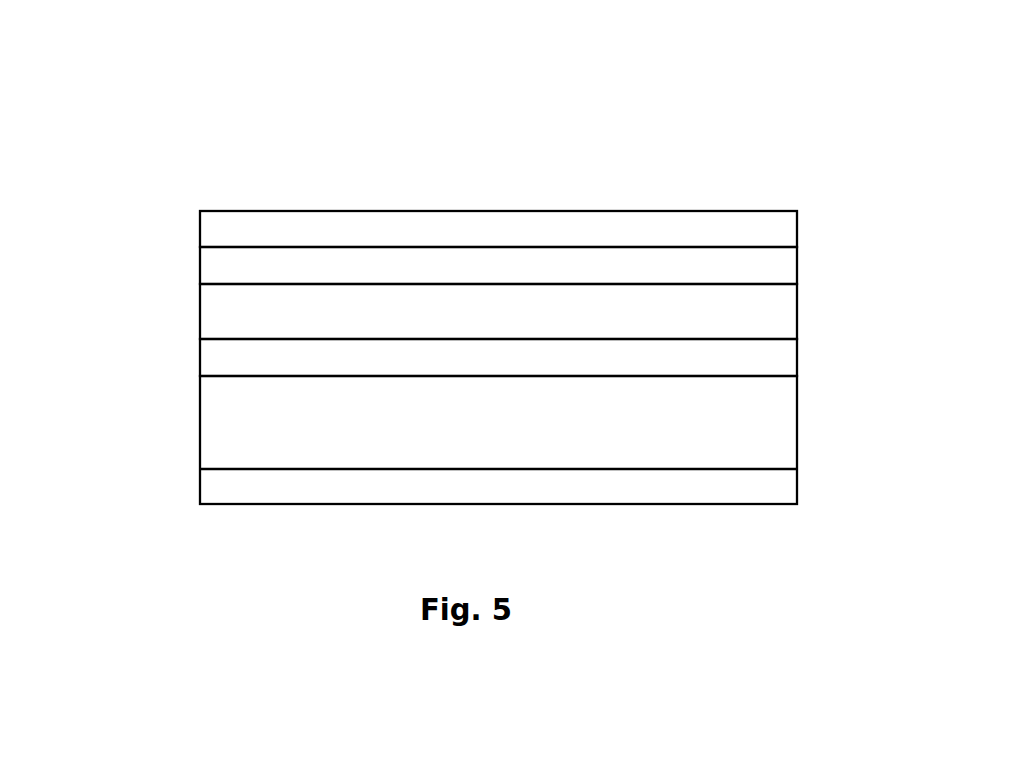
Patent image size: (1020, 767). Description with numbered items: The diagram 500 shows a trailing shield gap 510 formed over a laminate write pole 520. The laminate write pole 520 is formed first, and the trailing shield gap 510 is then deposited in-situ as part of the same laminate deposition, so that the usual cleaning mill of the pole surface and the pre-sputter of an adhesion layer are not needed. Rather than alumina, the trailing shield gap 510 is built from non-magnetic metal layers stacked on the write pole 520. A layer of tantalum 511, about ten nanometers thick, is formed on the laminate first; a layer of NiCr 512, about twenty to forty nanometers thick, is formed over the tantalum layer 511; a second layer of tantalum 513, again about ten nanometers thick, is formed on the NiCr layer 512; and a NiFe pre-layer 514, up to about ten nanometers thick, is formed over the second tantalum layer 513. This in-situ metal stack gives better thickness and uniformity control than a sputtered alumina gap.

The diagram 500 is at (160, 126).
The trailing shield gap 510 is at (172, 358).
The layer of tantalum 511 is at (559, 352).
The layer of NiCr 512 is at (559, 311).
The second layer of tantalum 513 is at (559, 261).
The NiFe pre-layer 514 is at (559, 220).
The laminate write pole 520 is at (193, 503).